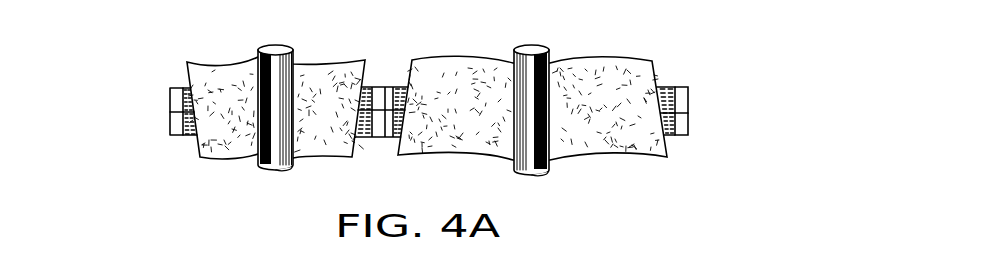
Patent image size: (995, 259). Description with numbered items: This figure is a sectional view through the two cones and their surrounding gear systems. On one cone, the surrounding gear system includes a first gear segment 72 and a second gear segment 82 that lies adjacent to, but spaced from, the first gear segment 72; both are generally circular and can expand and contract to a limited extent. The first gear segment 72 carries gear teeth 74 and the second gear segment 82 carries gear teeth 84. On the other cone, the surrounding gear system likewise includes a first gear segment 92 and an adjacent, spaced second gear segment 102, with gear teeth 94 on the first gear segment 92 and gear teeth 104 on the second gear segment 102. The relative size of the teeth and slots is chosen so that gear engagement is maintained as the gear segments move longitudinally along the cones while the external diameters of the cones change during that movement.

The first gear segment 92 is at (167, 62).
The gear teeth 94 is at (170, 99).
The gear teeth 104 is at (170, 123).
The second gear segment 102 is at (181, 155).
The first gear segment 72 is at (680, 69).
The gear teeth 74 is at (682, 99).
The gear teeth 84 is at (682, 123).
The second gear segment 82 is at (692, 155).